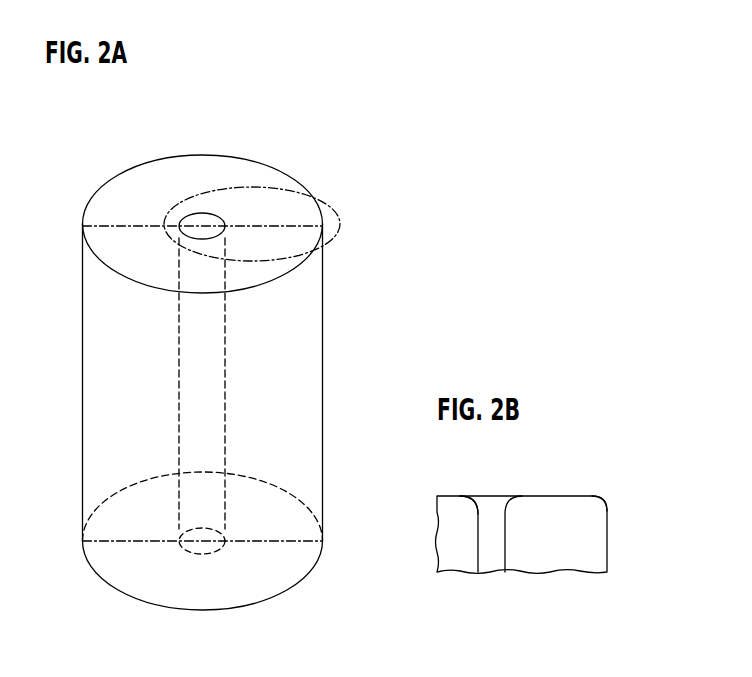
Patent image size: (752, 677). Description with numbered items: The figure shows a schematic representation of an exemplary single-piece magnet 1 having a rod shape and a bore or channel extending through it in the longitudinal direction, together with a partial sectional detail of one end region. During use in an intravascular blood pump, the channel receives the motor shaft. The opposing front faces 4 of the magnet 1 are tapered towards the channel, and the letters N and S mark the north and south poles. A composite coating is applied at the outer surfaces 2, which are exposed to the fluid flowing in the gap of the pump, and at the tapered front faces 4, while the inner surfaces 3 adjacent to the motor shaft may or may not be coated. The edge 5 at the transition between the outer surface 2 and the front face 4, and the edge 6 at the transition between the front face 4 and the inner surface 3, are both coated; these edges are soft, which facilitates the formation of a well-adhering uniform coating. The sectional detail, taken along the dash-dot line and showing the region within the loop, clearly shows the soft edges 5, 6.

In FIG. 2A, the single-piece magnet 1 is at (367, 188).
In FIG. 2A, the outer surface 2 is at (315, 378).
In FIG. 2A, the inner surface 3 is at (181, 417).
In FIG. 2A, the front face 4 is at (100, 244).
In FIG. 2B, the front face 4 is at (556, 494).
In FIG. 2A, the edge 5 is at (312, 191).
In FIG. 2B, the edge 5 is at (603, 497).
In FIG. 2A, the edge 6 is at (203, 221).
In FIG. 2B, the edge 6 is at (505, 496).